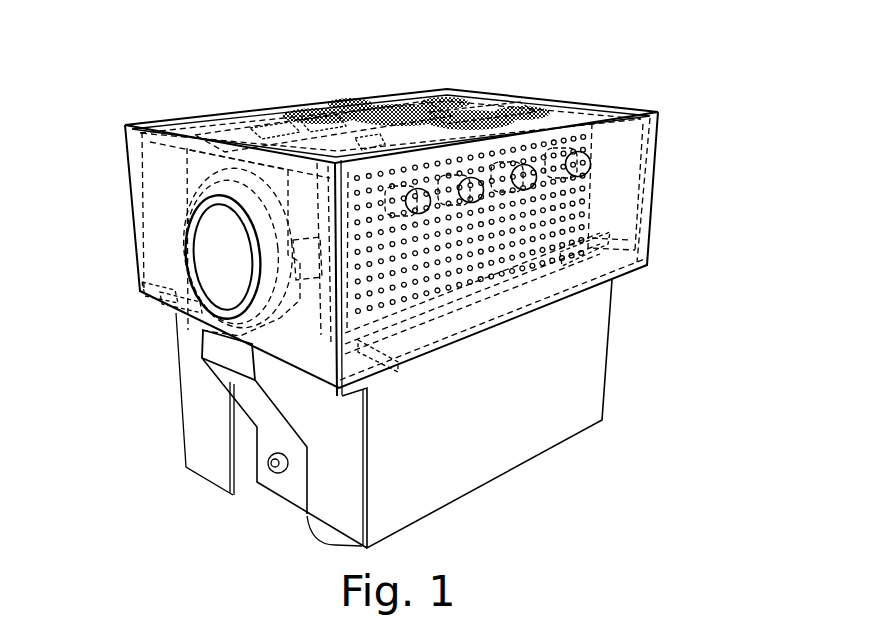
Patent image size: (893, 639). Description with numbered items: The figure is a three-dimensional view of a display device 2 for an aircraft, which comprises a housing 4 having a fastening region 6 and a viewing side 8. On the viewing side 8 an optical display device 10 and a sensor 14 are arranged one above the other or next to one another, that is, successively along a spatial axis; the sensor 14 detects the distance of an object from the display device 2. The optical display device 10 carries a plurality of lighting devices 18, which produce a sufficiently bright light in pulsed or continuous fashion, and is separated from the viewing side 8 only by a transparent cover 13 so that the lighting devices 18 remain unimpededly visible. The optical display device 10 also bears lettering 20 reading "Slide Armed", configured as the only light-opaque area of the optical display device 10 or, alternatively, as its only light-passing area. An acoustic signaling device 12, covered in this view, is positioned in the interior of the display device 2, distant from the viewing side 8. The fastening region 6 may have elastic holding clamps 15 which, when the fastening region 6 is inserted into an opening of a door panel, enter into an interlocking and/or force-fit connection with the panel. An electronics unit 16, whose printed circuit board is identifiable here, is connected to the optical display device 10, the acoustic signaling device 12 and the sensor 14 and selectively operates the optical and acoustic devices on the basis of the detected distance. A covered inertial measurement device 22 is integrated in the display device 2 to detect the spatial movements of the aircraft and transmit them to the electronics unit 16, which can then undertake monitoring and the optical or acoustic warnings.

The display device 2 is at (458, 82).
The housing 4 is at (592, 320).
The fastening region 6 is at (622, 379).
The viewing side 8 is at (667, 178).
The optical display device 10 is at (517, 113).
The acoustic signaling device 12 is at (275, 133).
The transparent cover 13 is at (642, 147).
The sensor 14 is at (228, 252).
The elastic holding clamps 15 is at (248, 383).
The electronics unit 16 is at (373, 300).
The lighting devices 18 is at (420, 205).
The lettering 20 is at (333, 110).
The inertial measurement device 22 is at (616, 212).